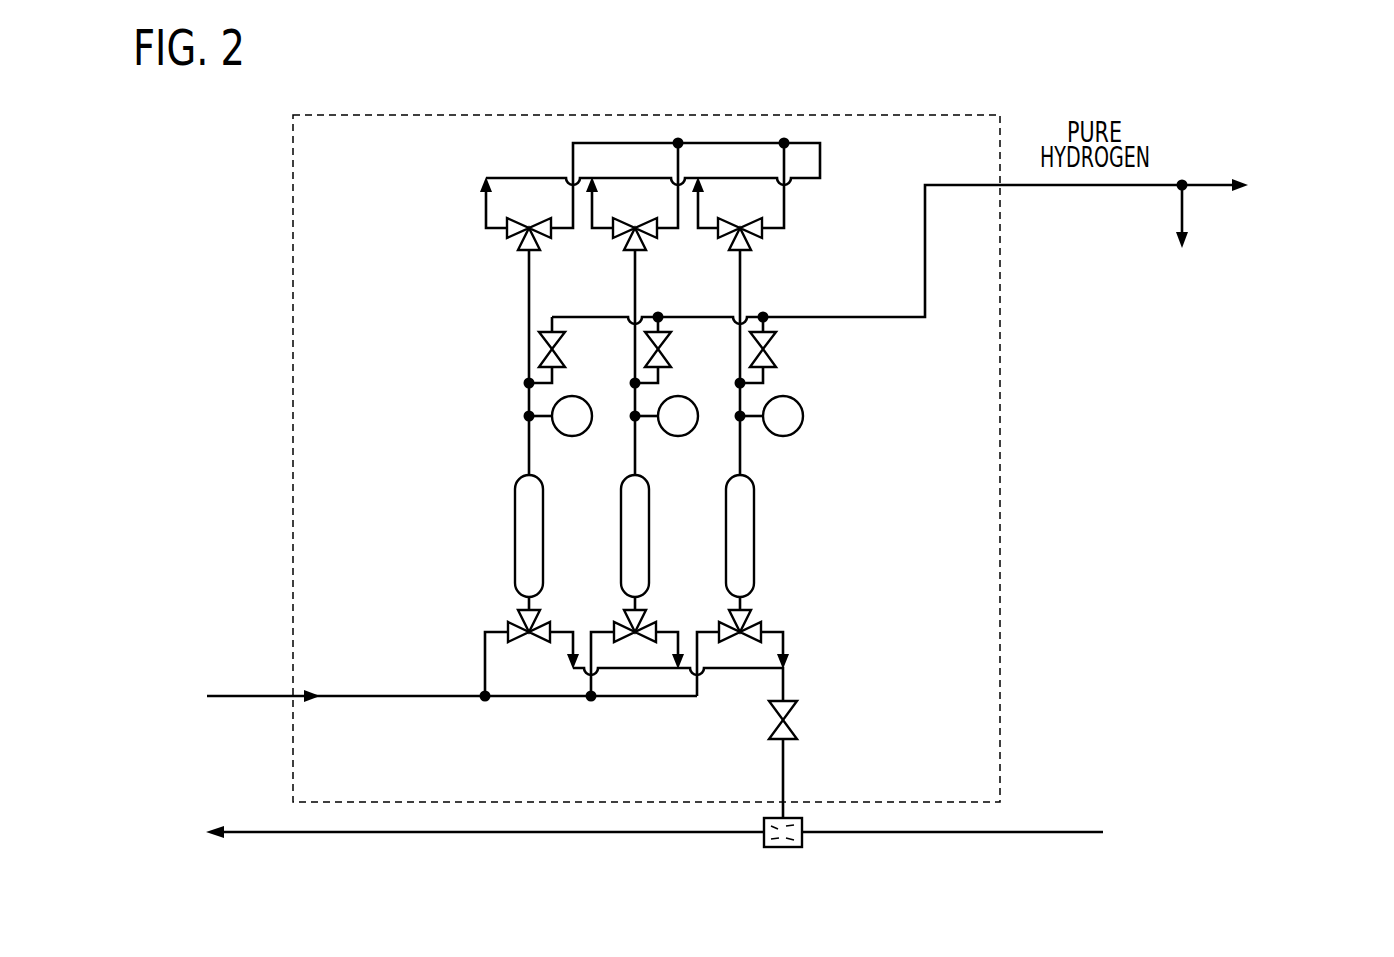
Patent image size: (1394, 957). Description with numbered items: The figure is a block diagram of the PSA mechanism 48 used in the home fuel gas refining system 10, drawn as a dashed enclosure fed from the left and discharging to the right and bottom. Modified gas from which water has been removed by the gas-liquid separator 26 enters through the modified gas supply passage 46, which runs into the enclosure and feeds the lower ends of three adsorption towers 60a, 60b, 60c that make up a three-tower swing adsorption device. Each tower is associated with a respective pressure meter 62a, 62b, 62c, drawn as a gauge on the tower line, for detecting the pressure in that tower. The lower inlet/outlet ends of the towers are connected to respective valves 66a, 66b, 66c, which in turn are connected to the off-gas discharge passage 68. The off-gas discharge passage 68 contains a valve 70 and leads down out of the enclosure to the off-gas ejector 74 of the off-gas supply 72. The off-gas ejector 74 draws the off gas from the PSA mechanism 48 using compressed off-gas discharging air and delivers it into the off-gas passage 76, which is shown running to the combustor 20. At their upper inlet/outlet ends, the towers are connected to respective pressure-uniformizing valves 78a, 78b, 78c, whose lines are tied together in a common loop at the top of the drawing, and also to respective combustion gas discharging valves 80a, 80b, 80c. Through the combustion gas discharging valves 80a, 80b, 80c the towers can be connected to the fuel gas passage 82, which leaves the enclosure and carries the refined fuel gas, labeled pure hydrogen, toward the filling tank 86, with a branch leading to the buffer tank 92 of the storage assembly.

The home fuel gas refining system 10 is at (230, 134).
The combustor 20 is at (139, 833).
The gas-liquid separator 26 is at (140, 704).
The modified gas supply passage 46 is at (262, 695).
The PSA mechanism 48 is at (1004, 494).
The adsorption tower 60a is at (519, 476).
The adsorption tower 60b is at (625, 476).
The adsorption tower 60c is at (731, 476).
The pressure meter 62a is at (572, 437).
The pressure meter 62b is at (678, 437).
The pressure meter 62c is at (783, 437).
The valve 66a is at (545, 617).
The valve 66b is at (651, 617).
The valve 66c is at (757, 617).
The off-gas discharge passage 68 is at (785, 758).
The valve 70 is at (768, 721).
The off-gas supply 72 is at (811, 869).
The off-gas ejector 74 is at (812, 861).
The off-gas passage 76 is at (603, 835).
The pressure-uniformizing valve 78a is at (504, 238).
The pressure-uniformizing valve 78b is at (608, 238).
The pressure-uniformizing valve 78c is at (713, 238).
The combustion gas discharging valve 80a is at (567, 350).
The combustion gas discharging valve 80b is at (673, 350).
The combustion gas discharging valve 80c is at (778, 350).
The fuel gas passage 82 is at (1128, 187).
The filling tank 86 is at (1321, 185).
The buffer tank 92 is at (1183, 246).